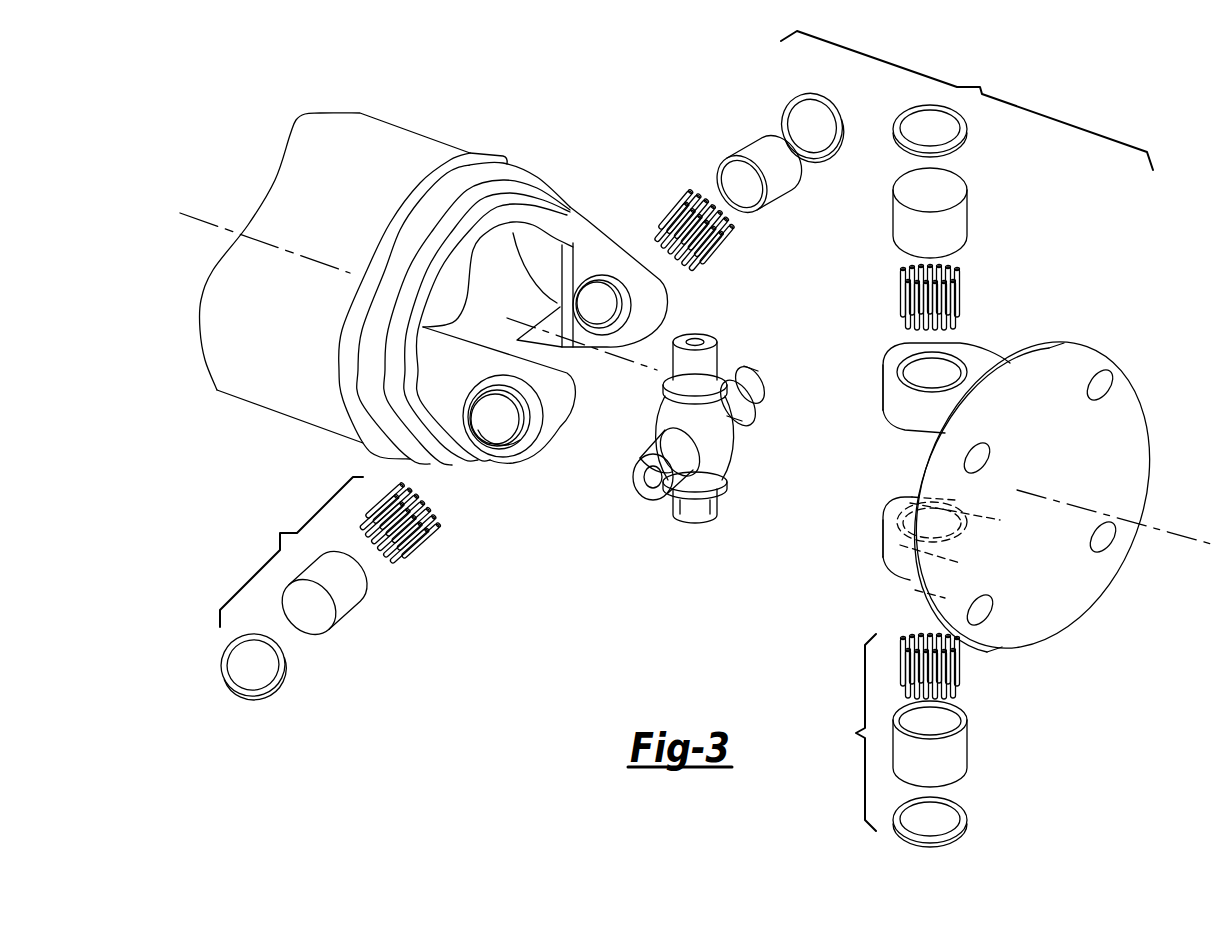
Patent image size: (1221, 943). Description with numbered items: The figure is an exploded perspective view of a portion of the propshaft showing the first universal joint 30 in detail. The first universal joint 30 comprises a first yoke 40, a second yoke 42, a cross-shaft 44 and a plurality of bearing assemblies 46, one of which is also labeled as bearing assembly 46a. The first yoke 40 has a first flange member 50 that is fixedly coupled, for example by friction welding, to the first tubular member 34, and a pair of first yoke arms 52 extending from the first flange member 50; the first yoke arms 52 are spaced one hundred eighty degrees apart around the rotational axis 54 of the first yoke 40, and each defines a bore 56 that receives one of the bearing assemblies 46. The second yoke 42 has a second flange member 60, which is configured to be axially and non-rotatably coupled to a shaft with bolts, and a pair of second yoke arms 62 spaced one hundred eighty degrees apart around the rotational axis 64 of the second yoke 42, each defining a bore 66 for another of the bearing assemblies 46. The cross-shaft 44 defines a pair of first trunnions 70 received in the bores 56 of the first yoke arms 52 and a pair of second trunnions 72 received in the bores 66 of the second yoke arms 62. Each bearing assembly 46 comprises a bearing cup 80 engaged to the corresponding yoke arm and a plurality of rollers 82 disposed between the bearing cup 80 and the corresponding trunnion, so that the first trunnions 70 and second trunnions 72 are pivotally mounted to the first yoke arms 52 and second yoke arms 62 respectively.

The first universal joint 30 is at (967, 100).
The first tubular member 34 is at (375, 130).
The first yoke 40 is at (592, 204).
The second yoke 42 is at (1092, 325).
The cross-shaft 44 is at (708, 430).
The bearing assemblies 46 is at (291, 552).
The bearing kit 46a is at (849, 732).
The first flange member 50 is at (377, 388).
The first yoke arms 52 is at (617, 250).
The rotational axis 54 is at (210, 220).
The bore 56 is at (513, 436).
The second flange member 60 is at (935, 477).
The second yoke arms 62 is at (952, 400).
The rotational axis 64 is at (1196, 565).
The bore 66 is at (930, 372).
The first trunnions 70 is at (665, 445).
The second trunnions 72 is at (703, 510).
The bearing cup 80 is at (738, 138).
The rollers 82 is at (690, 196).